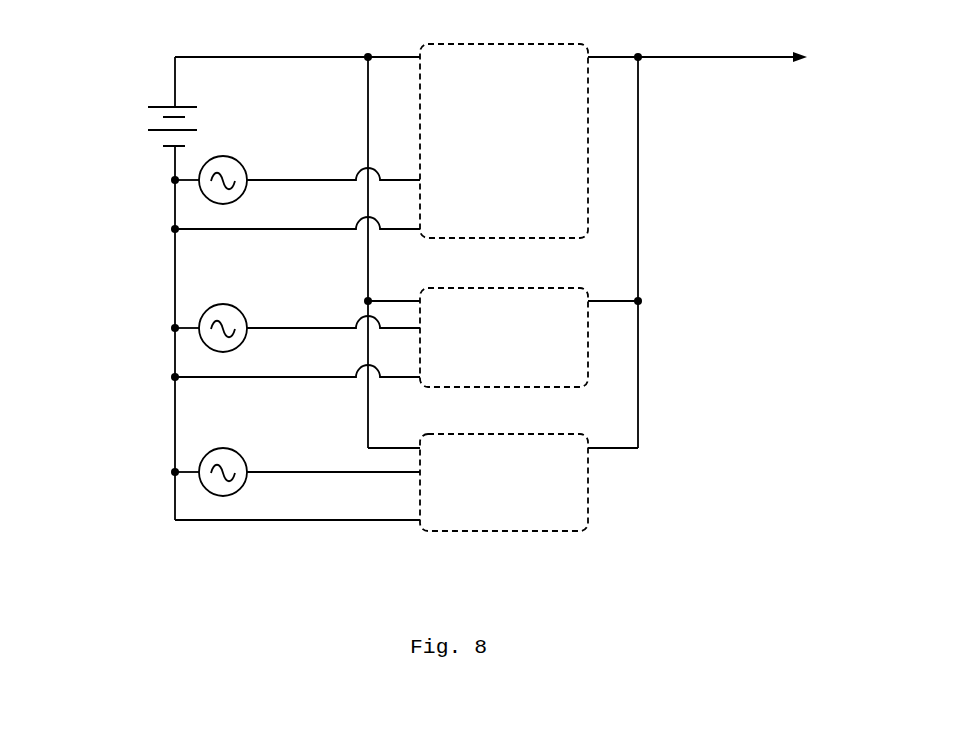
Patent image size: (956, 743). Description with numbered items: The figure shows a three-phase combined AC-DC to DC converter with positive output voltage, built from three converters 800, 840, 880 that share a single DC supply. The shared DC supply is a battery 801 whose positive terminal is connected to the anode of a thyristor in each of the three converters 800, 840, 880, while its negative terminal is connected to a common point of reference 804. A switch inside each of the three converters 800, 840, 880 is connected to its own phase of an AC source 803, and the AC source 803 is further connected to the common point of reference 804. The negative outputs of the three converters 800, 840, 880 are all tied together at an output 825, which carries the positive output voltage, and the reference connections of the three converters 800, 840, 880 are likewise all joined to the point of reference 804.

The converter 800 is at (465, 44).
The battery 801 is at (150, 107).
The AC source 803 is at (209, 452).
The common point of reference 804 is at (175, 472).
The output 825 is at (807, 57).
The converter 840 is at (589, 323).
The converter 880 is at (484, 533).